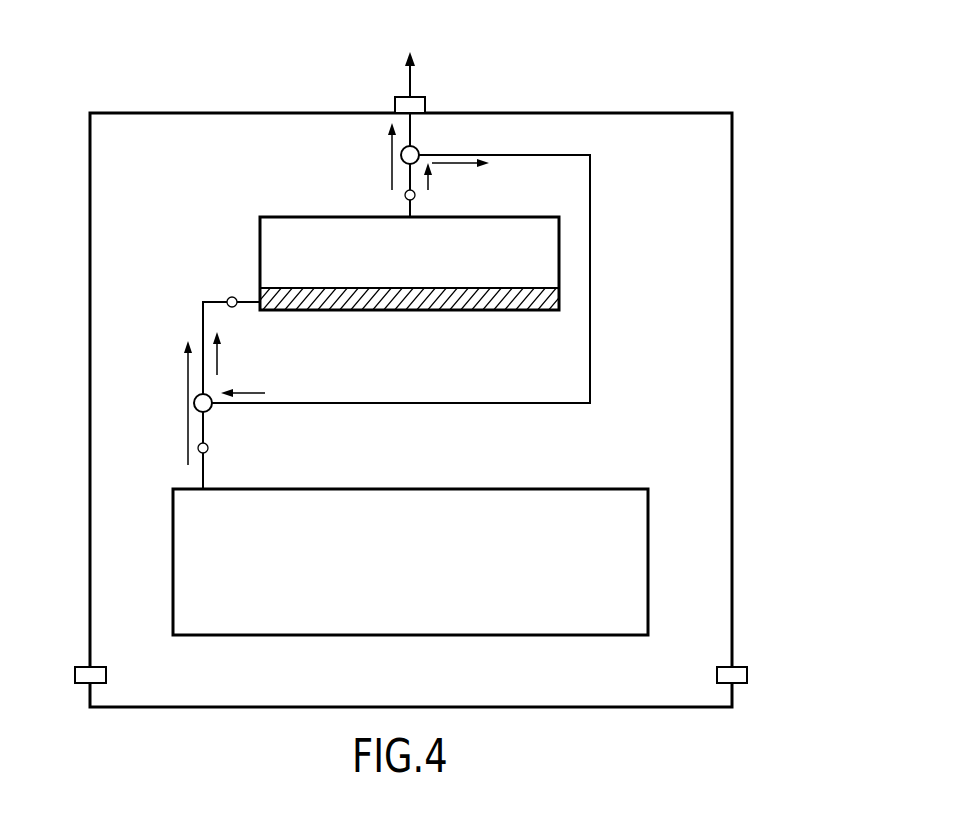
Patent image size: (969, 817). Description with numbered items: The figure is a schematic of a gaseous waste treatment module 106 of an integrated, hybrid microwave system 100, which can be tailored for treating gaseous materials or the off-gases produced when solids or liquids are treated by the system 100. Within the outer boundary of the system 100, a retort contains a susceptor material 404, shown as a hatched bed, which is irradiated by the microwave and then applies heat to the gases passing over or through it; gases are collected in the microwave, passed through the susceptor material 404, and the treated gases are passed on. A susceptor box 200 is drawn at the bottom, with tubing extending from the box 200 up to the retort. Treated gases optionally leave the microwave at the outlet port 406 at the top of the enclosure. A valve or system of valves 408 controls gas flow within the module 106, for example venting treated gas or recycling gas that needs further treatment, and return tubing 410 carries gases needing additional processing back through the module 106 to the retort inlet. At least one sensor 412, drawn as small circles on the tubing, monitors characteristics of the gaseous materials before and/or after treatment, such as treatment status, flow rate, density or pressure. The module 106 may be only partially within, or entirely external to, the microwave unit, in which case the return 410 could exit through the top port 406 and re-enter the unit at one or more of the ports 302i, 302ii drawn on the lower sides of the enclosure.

The integrated, hybrid microwave system 100 is at (578, 74).
The gaseous waste treatment module 106 is at (212, 214).
The susceptor box 200 is at (455, 488).
The port 302i is at (75, 672).
The port 302ii is at (762, 655).
The susceptor material 404 is at (452, 300).
The outlet port 406 is at (397, 99).
The valve 408 is at (417, 149).
The return tubing 410 is at (592, 265).
The sensor 412 is at (405, 197).